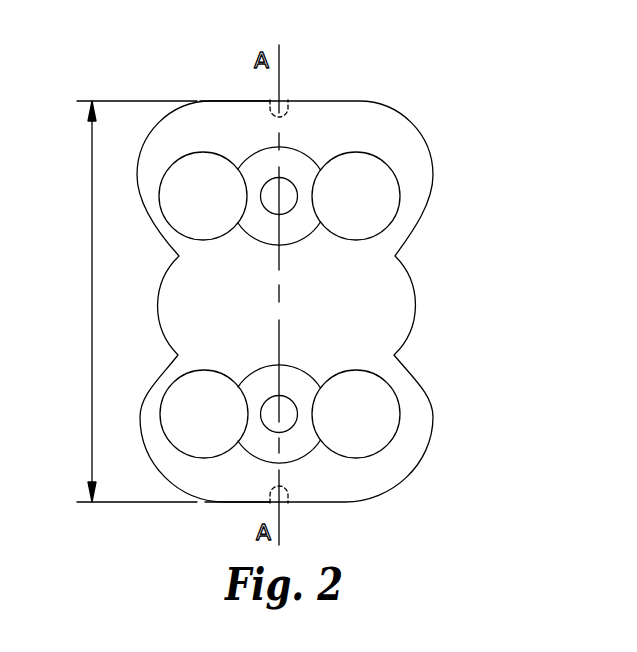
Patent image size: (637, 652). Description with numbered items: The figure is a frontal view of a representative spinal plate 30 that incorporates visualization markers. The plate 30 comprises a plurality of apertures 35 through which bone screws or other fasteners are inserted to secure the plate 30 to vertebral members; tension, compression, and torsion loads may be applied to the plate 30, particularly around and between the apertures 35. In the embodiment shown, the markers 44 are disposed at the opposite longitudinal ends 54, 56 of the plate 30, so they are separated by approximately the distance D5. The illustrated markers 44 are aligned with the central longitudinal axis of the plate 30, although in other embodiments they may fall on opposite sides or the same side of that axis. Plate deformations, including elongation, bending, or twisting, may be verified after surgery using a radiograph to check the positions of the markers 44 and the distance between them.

The plate 30 is at (400, 112).
The apertures 35 is at (360, 200).
The markers 44 is at (285, 102).
The longitudinal end 54 is at (238, 101).
The longitudinal end 56 is at (240, 502).
The distance D5 is at (123, 301).